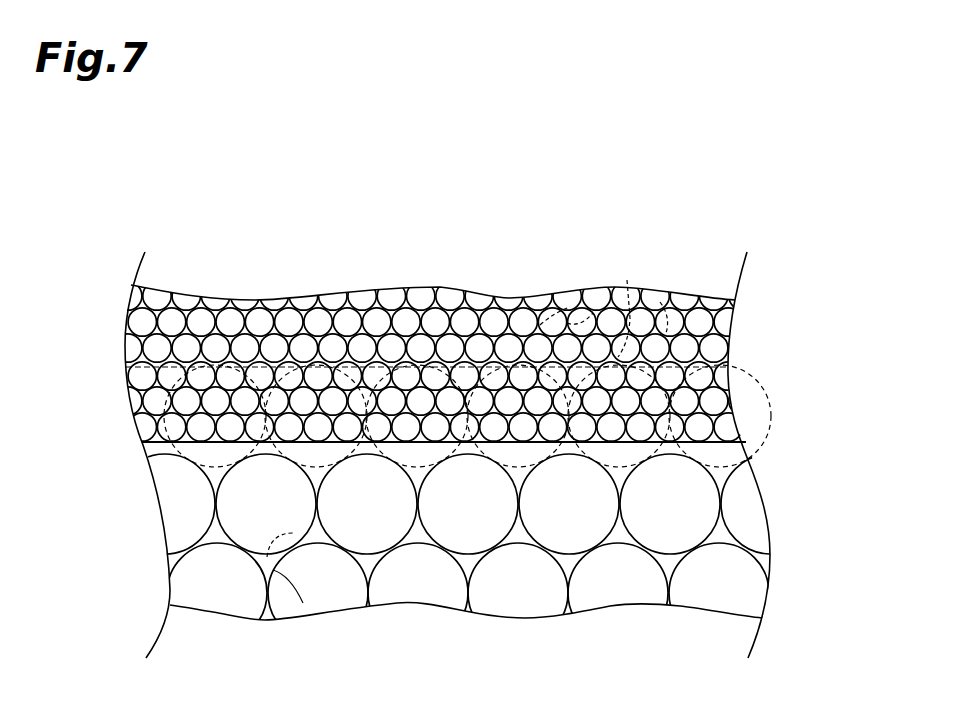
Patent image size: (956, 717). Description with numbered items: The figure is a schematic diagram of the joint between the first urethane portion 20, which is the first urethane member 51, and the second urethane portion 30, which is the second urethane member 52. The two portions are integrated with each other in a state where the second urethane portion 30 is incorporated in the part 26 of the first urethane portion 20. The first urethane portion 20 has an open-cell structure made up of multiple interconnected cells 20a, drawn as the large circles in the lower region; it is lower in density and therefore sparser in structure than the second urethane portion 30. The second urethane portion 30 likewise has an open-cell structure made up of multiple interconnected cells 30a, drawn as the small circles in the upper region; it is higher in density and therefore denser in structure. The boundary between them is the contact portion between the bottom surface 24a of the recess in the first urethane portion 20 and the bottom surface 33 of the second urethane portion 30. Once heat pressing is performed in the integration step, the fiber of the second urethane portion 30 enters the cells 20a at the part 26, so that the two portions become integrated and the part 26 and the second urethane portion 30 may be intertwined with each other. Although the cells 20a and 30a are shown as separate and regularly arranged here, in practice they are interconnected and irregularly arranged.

The second urethane portion 30 is at (443, 343).
The second urethane member 52 is at (443, 343).
The cells 30a is at (660, 302).
The bottom surface of the recess 24a is at (267, 362).
The first urethane portion 20 is at (468, 579).
The first urethane member 51 is at (468, 579).
The cells 20a is at (317, 460).
The part of the first urethane portion 26 is at (622, 607).
The bottom surface of the second urethane portion 33 is at (714, 485).